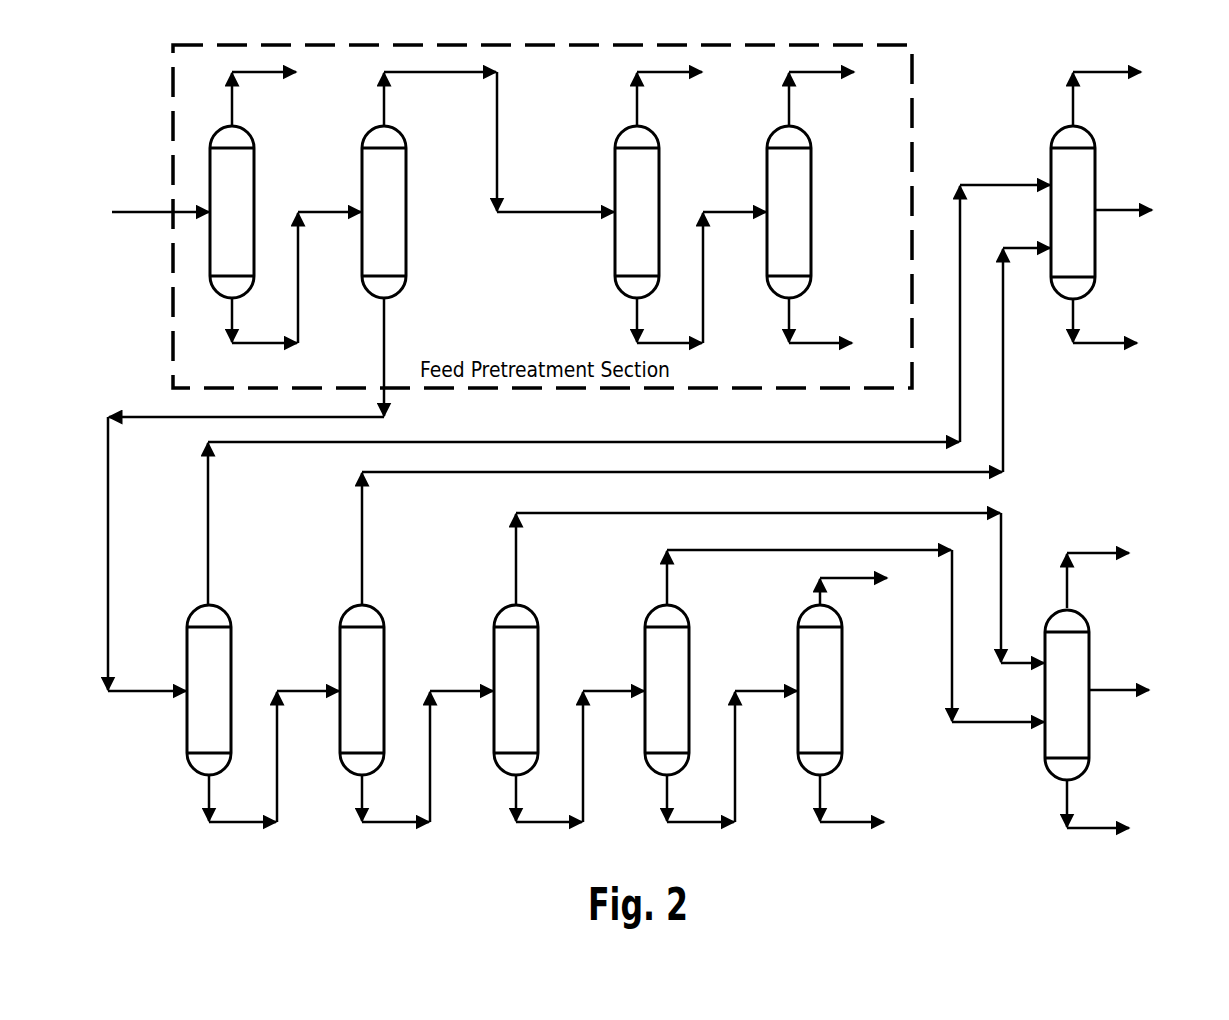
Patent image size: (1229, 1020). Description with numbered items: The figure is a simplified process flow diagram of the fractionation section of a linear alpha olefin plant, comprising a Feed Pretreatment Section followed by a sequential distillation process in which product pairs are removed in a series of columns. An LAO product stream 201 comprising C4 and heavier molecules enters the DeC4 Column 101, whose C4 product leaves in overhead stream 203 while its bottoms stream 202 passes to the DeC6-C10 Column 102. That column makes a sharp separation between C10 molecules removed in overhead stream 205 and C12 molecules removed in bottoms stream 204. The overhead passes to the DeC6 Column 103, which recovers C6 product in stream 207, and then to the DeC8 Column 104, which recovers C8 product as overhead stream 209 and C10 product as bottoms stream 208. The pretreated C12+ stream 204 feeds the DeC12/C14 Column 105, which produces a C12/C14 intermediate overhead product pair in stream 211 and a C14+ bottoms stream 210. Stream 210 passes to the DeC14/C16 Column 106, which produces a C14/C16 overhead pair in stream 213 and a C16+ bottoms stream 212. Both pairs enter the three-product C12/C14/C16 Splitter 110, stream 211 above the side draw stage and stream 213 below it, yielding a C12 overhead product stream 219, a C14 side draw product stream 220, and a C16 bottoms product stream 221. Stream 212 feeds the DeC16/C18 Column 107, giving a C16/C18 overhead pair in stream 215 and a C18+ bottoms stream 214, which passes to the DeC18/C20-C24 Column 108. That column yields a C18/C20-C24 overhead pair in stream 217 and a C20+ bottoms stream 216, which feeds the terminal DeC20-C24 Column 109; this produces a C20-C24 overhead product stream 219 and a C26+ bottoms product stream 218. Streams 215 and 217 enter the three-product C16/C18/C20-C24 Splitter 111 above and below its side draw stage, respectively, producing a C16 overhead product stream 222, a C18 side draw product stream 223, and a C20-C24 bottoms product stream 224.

The DeC4 Column 101 is at (262, 185).
The DeC6-C10 Column 102 is at (415, 185).
The DeC6 Column 103 is at (665, 185).
The DeC8 Column 104 is at (818, 185).
The DeC12/C14 Column 105 is at (240, 666).
The DeC14/C16 Column 106 is at (393, 666).
The DeC16/C18 Column 107 is at (545, 673).
The DeC18/C20-C24 Column 108 is at (697, 673).
The DeC20-C24 Column 109 is at (850, 723).
The C12/C14/C16 Splitter 110 is at (1100, 178).
The C16/C18/C20-C24 Splitter 111 is at (1095, 646).
The LAO product stream 201 is at (160, 203).
The bottoms stream of DeC4 Column 202 is at (262, 348).
The C4 product stream 203 is at (270, 78).
The C12+ bottoms stream 204 is at (390, 363).
The overhead stream of DeC6-C10 Column 205 is at (555, 220).
The C6 product stream 207 is at (677, 78).
The C10 product stream 208 is at (815, 348).
The C8 product stream 209 is at (830, 78).
The C14+ bottoms stream 210 is at (238, 835).
The C12/C14 intermediate overhead product pair stream 211 is at (214, 545).
The C16+ bottoms stream 212 is at (391, 835).
The C14/C16 intermediate overhead product pair stream 213 is at (368, 545).
The C18+ bottoms stream 214 is at (545, 832).
The C16/C18 intermediate overhead product pair stream 215 is at (522, 548).
The C20+ bottoms stream 216 is at (700, 832).
The C18/C20-C24 intermediate overhead product pair stream 217 is at (710, 555).
The C26+ bottoms product stream 218 is at (848, 832).
The overhead product stream 219 is at (1067, 112).
The C14 side draw product stream 220 is at (1113, 217).
The C16 bottoms product stream 221 is at (1108, 352).
The C16 overhead product stream 222 is at (1100, 548).
The C18 side draw product stream 223 is at (1105, 698).
The C20-C24 bottoms product stream 224 is at (1100, 836).